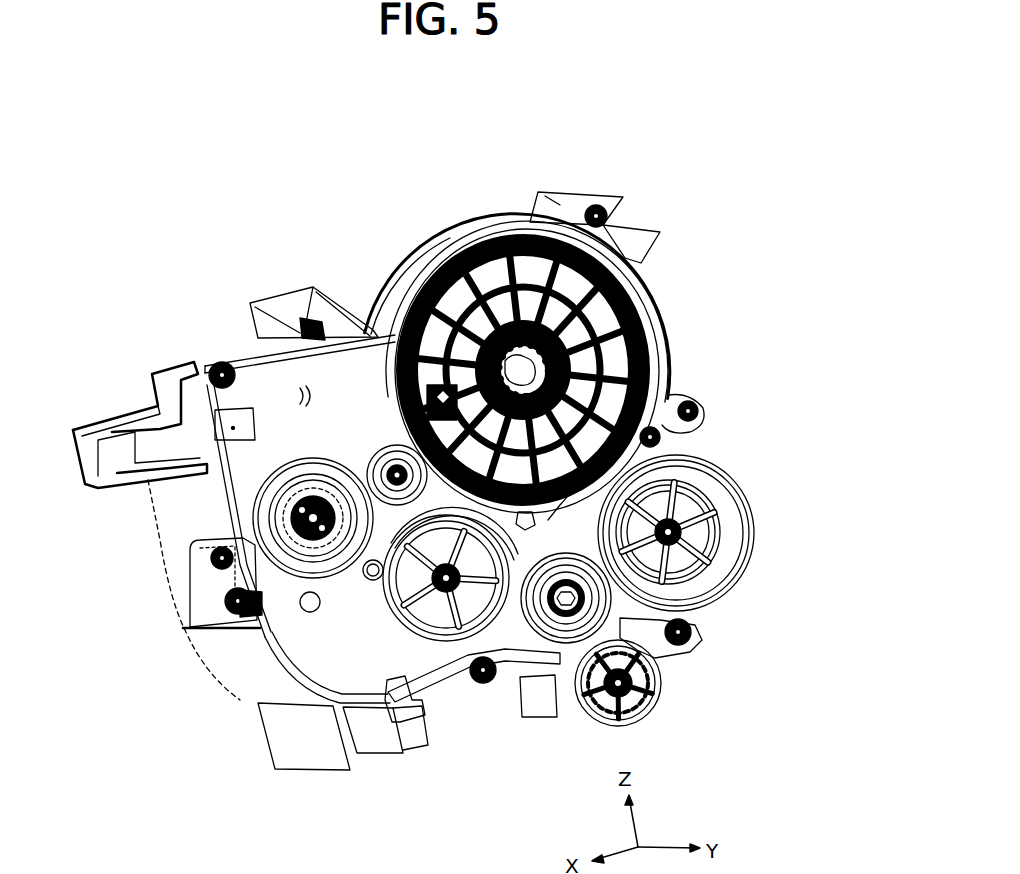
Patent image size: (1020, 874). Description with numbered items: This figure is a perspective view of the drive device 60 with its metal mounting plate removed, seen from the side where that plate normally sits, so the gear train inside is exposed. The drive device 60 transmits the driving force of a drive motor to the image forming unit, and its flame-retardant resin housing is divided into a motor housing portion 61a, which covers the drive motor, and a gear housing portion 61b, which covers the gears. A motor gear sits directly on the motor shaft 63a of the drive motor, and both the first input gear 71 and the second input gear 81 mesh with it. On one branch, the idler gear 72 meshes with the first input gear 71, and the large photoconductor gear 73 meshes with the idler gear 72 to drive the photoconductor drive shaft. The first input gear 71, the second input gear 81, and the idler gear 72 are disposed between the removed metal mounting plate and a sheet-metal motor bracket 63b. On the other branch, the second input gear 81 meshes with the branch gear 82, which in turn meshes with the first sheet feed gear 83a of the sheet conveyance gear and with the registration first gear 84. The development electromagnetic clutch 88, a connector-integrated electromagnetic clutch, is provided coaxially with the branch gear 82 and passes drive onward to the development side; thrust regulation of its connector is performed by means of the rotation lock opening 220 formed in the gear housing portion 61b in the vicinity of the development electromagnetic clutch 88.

The drive device 60 is at (693, 188).
The motor housing portion 61a is at (250, 678).
The gear housing portion 61b is at (397, 287).
The motor shaft 63a is at (365, 583).
The motor bracket 63b is at (243, 477).
The first input gear 71 is at (315, 470).
The idler gear 72 is at (387, 450).
The photoconductor gear 73 is at (467, 287).
The second input gear 81 is at (388, 625).
The branch gear 82 is at (578, 652).
The first sheet feed gear 83a is at (656, 705).
The registration first gear 84 is at (717, 482).
The development electromagnetic clutch 88 is at (545, 522).
The rotation lock opening 220 is at (510, 680).